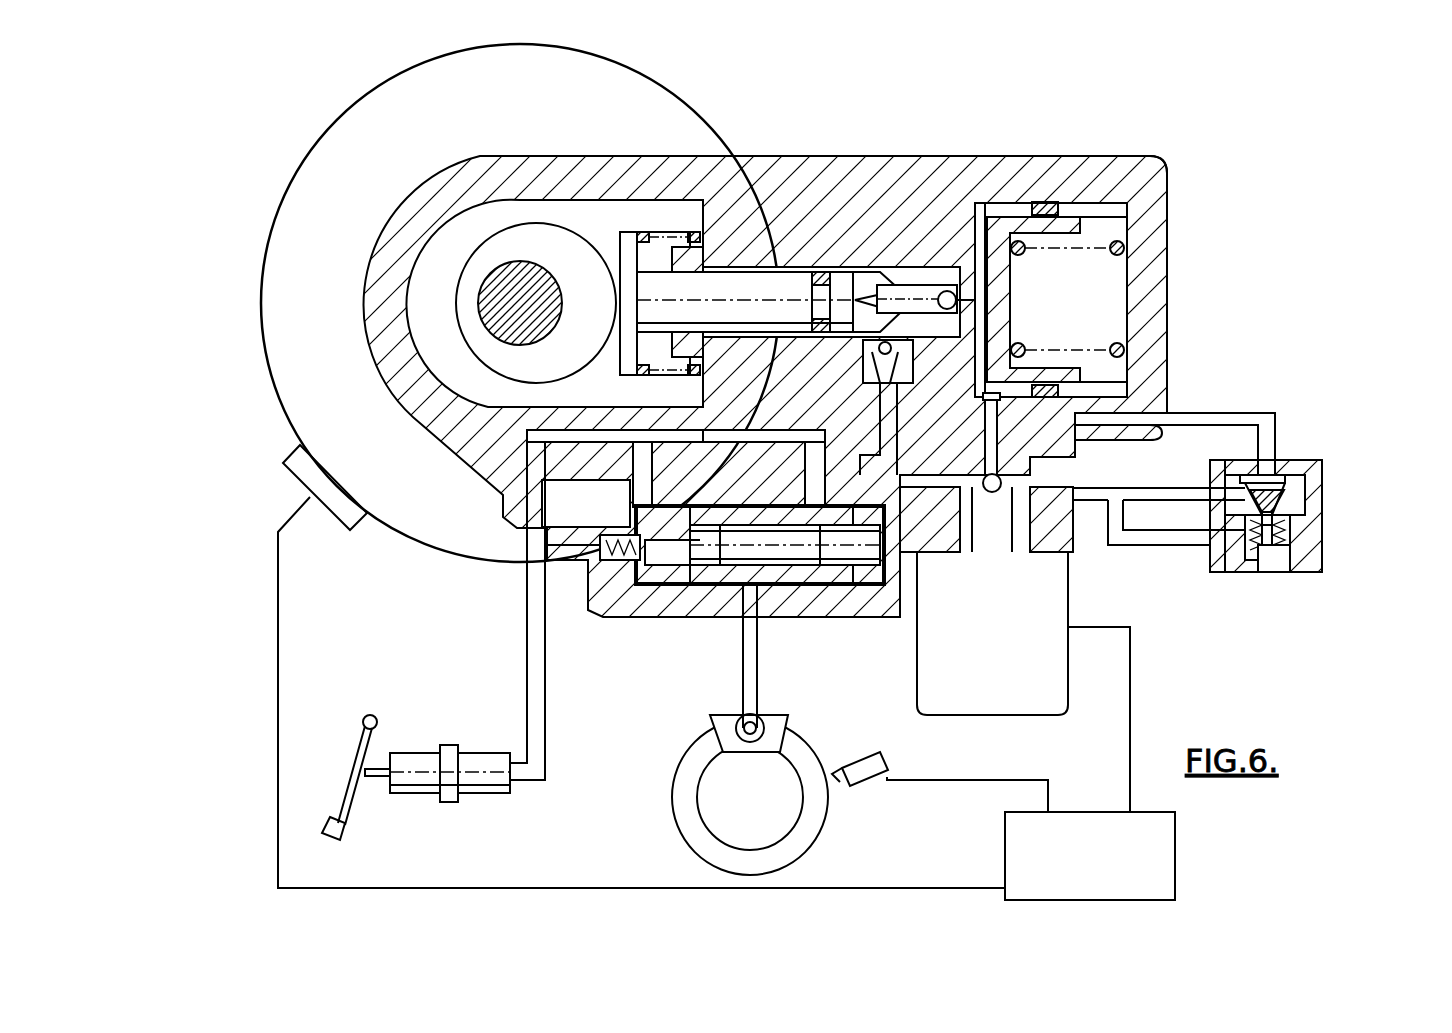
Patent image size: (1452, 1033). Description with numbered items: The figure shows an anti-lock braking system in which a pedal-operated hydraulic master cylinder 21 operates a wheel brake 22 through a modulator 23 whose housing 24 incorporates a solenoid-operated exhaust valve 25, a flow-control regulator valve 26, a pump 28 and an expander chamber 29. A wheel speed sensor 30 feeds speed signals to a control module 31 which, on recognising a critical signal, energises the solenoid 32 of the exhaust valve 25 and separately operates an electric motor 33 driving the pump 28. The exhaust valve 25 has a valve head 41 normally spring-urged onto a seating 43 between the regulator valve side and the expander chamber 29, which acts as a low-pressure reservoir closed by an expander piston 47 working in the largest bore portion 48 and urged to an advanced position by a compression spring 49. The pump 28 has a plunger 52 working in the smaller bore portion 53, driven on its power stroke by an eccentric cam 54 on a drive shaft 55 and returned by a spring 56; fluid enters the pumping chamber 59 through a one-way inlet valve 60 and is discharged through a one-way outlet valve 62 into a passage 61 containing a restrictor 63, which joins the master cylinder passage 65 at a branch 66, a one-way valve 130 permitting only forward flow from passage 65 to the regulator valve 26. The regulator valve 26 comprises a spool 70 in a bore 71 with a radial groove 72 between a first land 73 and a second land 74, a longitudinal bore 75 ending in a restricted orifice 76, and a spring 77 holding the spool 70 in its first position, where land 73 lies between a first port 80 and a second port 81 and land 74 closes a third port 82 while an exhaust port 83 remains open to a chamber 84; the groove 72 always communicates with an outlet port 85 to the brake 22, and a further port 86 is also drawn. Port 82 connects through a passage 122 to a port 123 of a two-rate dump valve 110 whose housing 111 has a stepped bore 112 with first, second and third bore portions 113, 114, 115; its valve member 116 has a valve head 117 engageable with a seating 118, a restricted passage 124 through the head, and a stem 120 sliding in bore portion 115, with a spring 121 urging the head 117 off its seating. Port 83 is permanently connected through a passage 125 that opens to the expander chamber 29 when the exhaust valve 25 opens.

The hydraulic master cylinder 21 is at (455, 770).
The wheel brake 22 is at (770, 725).
The modulator 23 is at (810, 190).
The housing 24 is at (1162, 210).
The solenoid-operated exhaust valve 25 is at (1040, 600).
The flow-control regulator valve 26 is at (690, 600).
The pump 28 is at (720, 280).
The expander chamber 29 is at (1015, 205).
The wheel speed sensor 30 is at (870, 775).
The control module 31 is at (1176, 872).
The solenoid 32 is at (1060, 625).
The electric motor 33 is at (300, 330).
The valve head 41 is at (1060, 508).
The seating 43 is at (998, 478).
The expander piston 47 is at (985, 210).
The bore portion of largest diameter 48 is at (1100, 215).
The compression spring 49 is at (1112, 256).
The plunger 52 is at (765, 292).
The bore portion of smaller diameter 53 is at (805, 270).
The eccentric cam 54 is at (575, 262).
The drive shaft 55 is at (515, 300).
The spring 56 is at (645, 232).
The pumping chamber 59 is at (905, 290).
The one-way inlet valve 60 is at (950, 292).
The passage 61 is at (745, 430).
The one-way outlet valve 62 is at (862, 350).
The restrictor 63 is at (575, 432).
The passage 65 is at (580, 600).
The branch 66 is at (590, 548).
The spool 70 is at (815, 585).
The bore 71 is at (850, 585).
The radial groove 72 is at (790, 500).
The first land 73 is at (650, 585).
The second land 74 is at (882, 460).
The longitudinal bore 75 is at (722, 580).
The restricted orifice 76 is at (695, 560).
The spring 77 is at (825, 590).
The first port 80 is at (625, 498).
The second port 81 is at (650, 470).
The third port 82 is at (815, 440).
The fourth exhaust port 83 is at (875, 505).
The chamber 84 is at (1012, 545).
The outlet port 85 is at (740, 660).
The port 86 is at (972, 530).
The two-rate dump valve 110 is at (1312, 490).
The housing 111 is at (1312, 500).
The stepped bore 112 is at (1310, 512).
The first bore portion 113 is at (1300, 485).
The second bore portion 114 is at (1295, 538).
The third bore portion 115 is at (1300, 556).
The valve member 116 is at (1245, 500).
The valve head 117 is at (1272, 478).
The seating 118 is at (1215, 494).
The stem 120 is at (1275, 572).
The spring 121 is at (1225, 572).
The passage 122 is at (1160, 412).
The port 123 is at (1278, 440).
The restricted passage 124 is at (1262, 455).
The passage 125 is at (1212, 508).
The one-way valve 130 is at (605, 560).